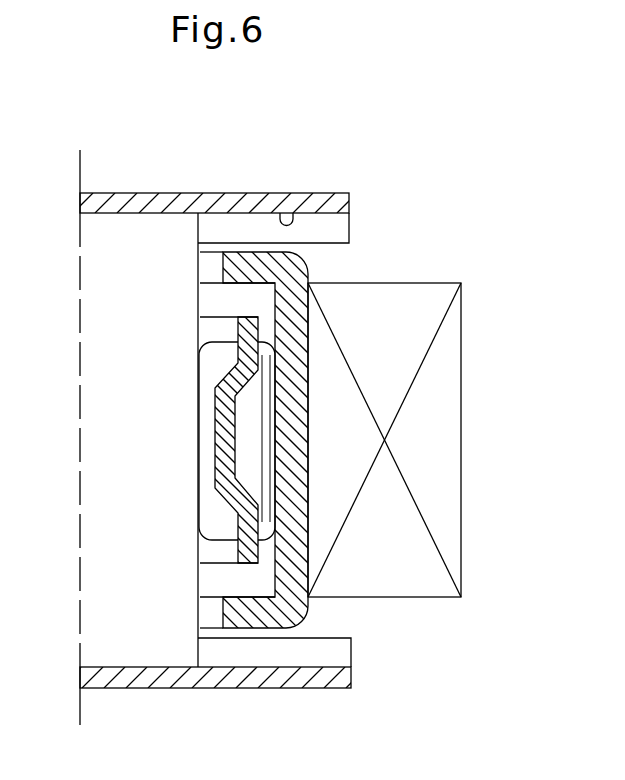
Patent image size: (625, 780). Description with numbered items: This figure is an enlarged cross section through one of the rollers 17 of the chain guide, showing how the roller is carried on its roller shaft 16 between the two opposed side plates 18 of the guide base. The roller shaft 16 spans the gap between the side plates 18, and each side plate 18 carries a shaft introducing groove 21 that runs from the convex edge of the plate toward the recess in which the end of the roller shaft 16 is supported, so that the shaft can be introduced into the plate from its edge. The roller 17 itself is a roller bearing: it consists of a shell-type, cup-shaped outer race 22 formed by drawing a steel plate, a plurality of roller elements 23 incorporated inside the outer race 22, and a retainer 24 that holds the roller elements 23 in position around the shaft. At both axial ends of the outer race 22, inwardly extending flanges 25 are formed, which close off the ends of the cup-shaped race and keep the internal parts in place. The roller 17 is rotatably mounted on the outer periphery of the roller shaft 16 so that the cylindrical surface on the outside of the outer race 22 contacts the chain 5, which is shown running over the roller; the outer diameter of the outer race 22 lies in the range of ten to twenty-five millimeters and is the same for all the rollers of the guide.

The chain 5 is at (455, 334).
The roller shaft 16 is at (140, 230).
The roller 17 is at (308, 266).
The side plate 18 is at (350, 204).
The shaft introducing groove 21 is at (297, 218).
The outer race 22 is at (305, 372).
The roller element 23 is at (255, 435).
The retainer 24 is at (250, 503).
The flange 25 is at (312, 440).